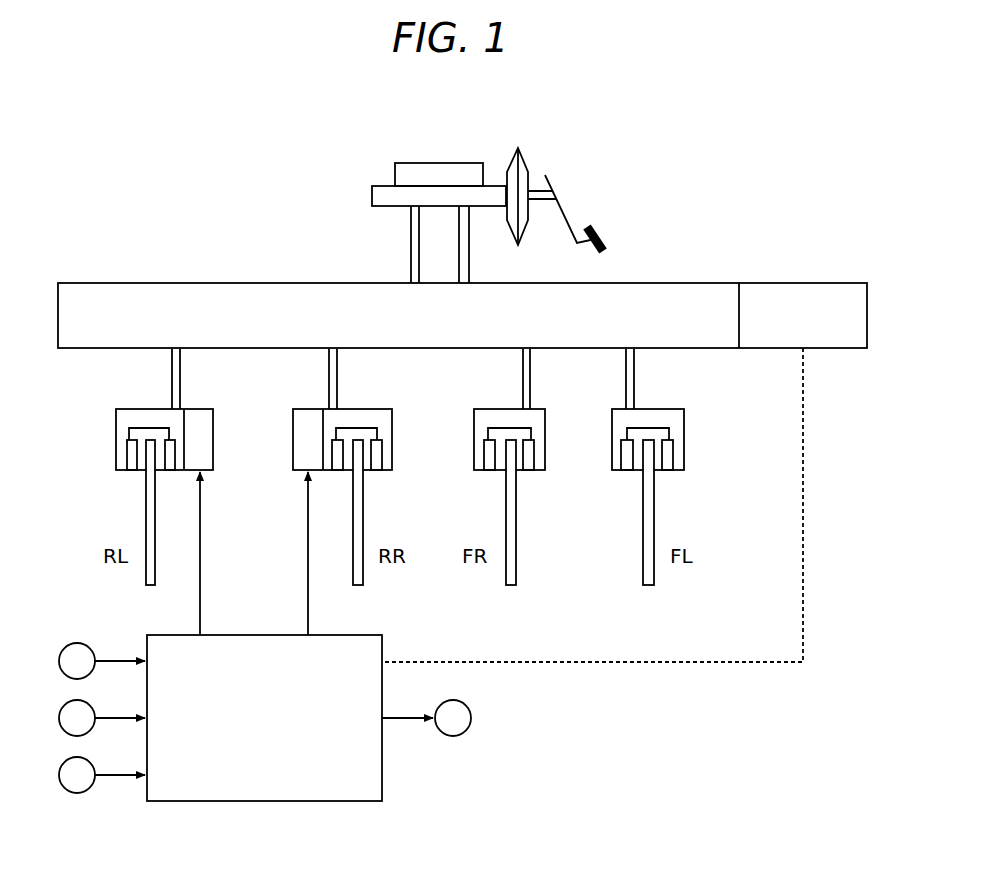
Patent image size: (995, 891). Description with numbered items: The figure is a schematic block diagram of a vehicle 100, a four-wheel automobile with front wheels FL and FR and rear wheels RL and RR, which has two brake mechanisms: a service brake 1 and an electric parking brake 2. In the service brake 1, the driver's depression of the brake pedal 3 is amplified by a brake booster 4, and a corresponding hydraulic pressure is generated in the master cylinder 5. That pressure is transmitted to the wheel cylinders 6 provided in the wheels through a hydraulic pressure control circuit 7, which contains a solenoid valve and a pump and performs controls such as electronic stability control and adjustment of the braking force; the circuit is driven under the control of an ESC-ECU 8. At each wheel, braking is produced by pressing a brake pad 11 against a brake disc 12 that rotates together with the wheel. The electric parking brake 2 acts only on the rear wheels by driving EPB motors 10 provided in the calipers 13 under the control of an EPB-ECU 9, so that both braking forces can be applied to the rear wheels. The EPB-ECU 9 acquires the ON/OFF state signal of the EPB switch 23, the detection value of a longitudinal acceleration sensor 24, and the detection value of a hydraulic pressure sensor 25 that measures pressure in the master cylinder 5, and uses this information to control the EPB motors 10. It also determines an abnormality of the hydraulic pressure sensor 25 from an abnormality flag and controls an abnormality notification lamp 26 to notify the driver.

The vehicle 100 is at (257, 118).
The service brake 1 is at (582, 177).
The electric parking brake 2 is at (219, 513).
The brake pedal 3 is at (593, 226).
The brake booster 4 is at (528, 162).
The master cylinder 5 is at (379, 186).
The wheel cylinder 6 is at (180, 407).
The hydraulic pressure control circuit 7 is at (698, 283).
The ESC-ECU 8 is at (836, 283).
The EPB-ECU 9 is at (360, 801).
The EPB motor 10 is at (214, 432).
The brake pad 11 is at (132, 468).
The brake disc 12 is at (146, 517).
The caliper 13 is at (120, 406).
The EPB switch 23 is at (66, 705).
The longitudinal acceleration sensor 24 is at (66, 648).
The hydraulic pressure sensor 25 is at (66, 762).
The abnormality notification lamp 26 is at (463, 701).